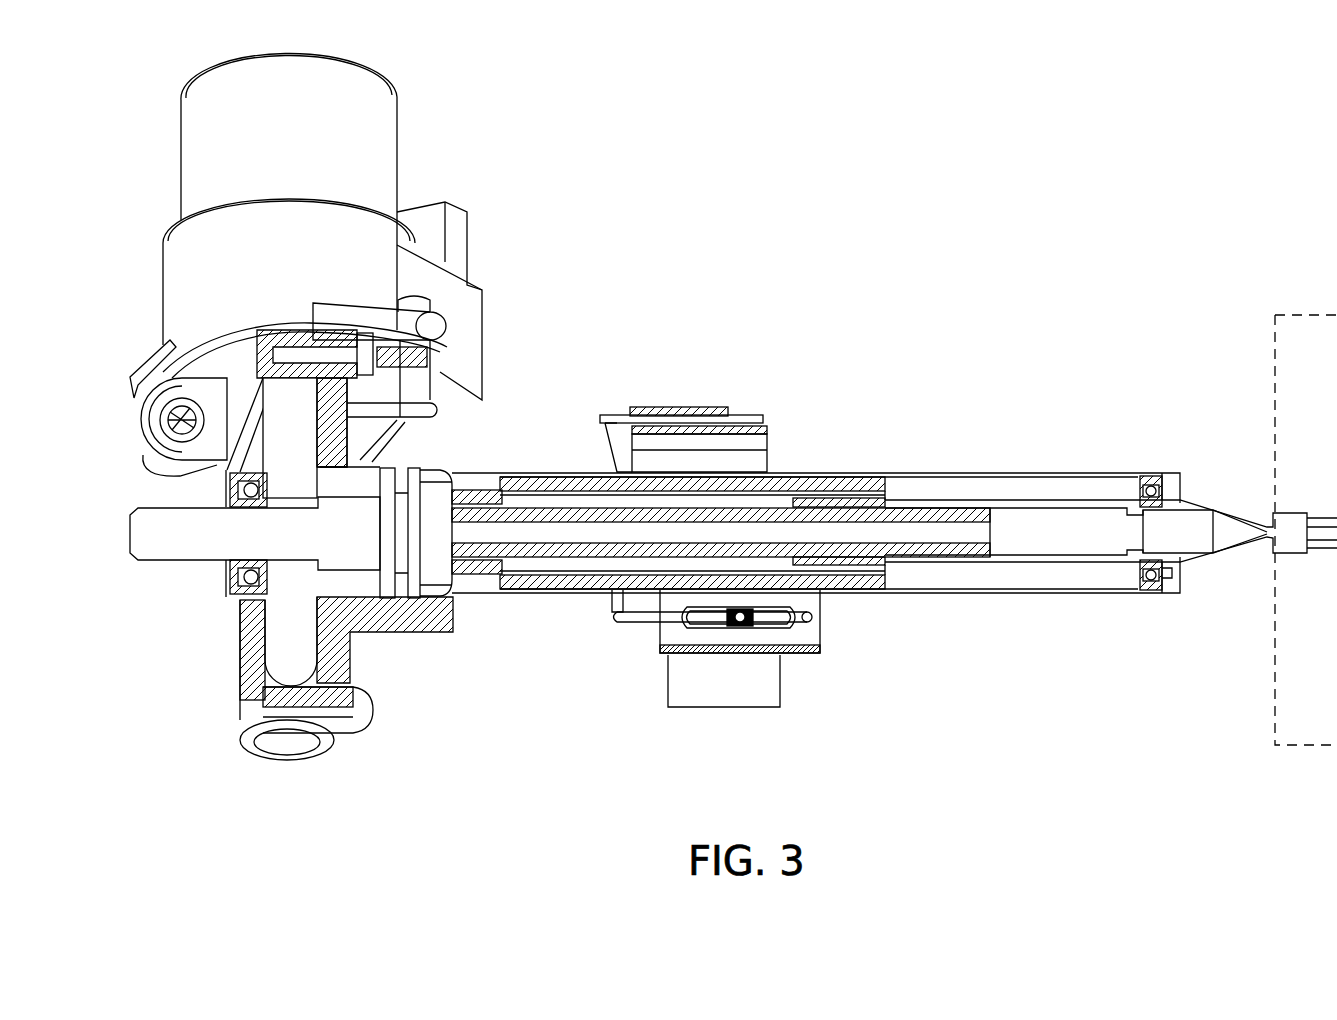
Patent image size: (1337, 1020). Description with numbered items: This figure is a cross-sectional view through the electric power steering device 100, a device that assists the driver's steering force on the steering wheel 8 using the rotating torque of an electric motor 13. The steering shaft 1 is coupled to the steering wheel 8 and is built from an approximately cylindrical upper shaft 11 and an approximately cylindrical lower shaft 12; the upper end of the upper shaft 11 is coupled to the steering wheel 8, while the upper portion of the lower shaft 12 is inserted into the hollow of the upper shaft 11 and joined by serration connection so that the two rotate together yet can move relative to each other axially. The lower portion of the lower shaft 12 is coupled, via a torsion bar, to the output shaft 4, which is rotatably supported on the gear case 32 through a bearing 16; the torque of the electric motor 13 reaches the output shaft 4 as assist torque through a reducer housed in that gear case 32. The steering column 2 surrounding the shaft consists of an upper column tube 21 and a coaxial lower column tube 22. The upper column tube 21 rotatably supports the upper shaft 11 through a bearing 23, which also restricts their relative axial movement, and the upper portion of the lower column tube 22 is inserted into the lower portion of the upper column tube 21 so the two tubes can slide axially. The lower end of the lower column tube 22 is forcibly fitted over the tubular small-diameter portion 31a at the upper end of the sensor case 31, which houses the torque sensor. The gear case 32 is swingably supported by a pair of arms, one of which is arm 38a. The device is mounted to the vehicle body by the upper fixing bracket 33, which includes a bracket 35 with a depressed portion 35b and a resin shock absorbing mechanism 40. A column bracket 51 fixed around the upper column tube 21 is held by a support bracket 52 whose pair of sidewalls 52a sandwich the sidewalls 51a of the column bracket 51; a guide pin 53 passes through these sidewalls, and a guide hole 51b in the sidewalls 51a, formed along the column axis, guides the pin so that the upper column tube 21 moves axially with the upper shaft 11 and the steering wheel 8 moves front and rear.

The steering shaft 1 is at (1218, 484).
The steering column 2 is at (816, 583).
The output shaft 4 is at (160, 545).
The steering wheel 8 is at (1292, 750).
The upper shaft 11 is at (1010, 500).
The lower shaft 12 is at (930, 500).
The electric motor 13 is at (410, 102).
The bearing 16 is at (245, 590).
The upper column tube 21 is at (942, 595).
The lower column tube 22 is at (848, 590).
The bearing 23 is at (1145, 478).
The sensor case 31 is at (440, 480).
The small-diameter portion 31a is at (490, 495).
The gear case 32 is at (255, 665).
The upper fixing bracket 33 is at (687, 368).
The bracket 35 is at (740, 410).
The depressed portion 35b is at (668, 408).
The arm 38a is at (160, 422).
The shock absorbing mechanism 40 is at (690, 405).
The column bracket 51 is at (820, 640).
The sidewall 51a is at (775, 462).
The guide hole 51b is at (778, 628).
The support bracket 52 is at (655, 680).
The sidewall 52a is at (780, 436).
The guide pin 53 is at (740, 626).
The electric power steering device 100 is at (1175, 282).